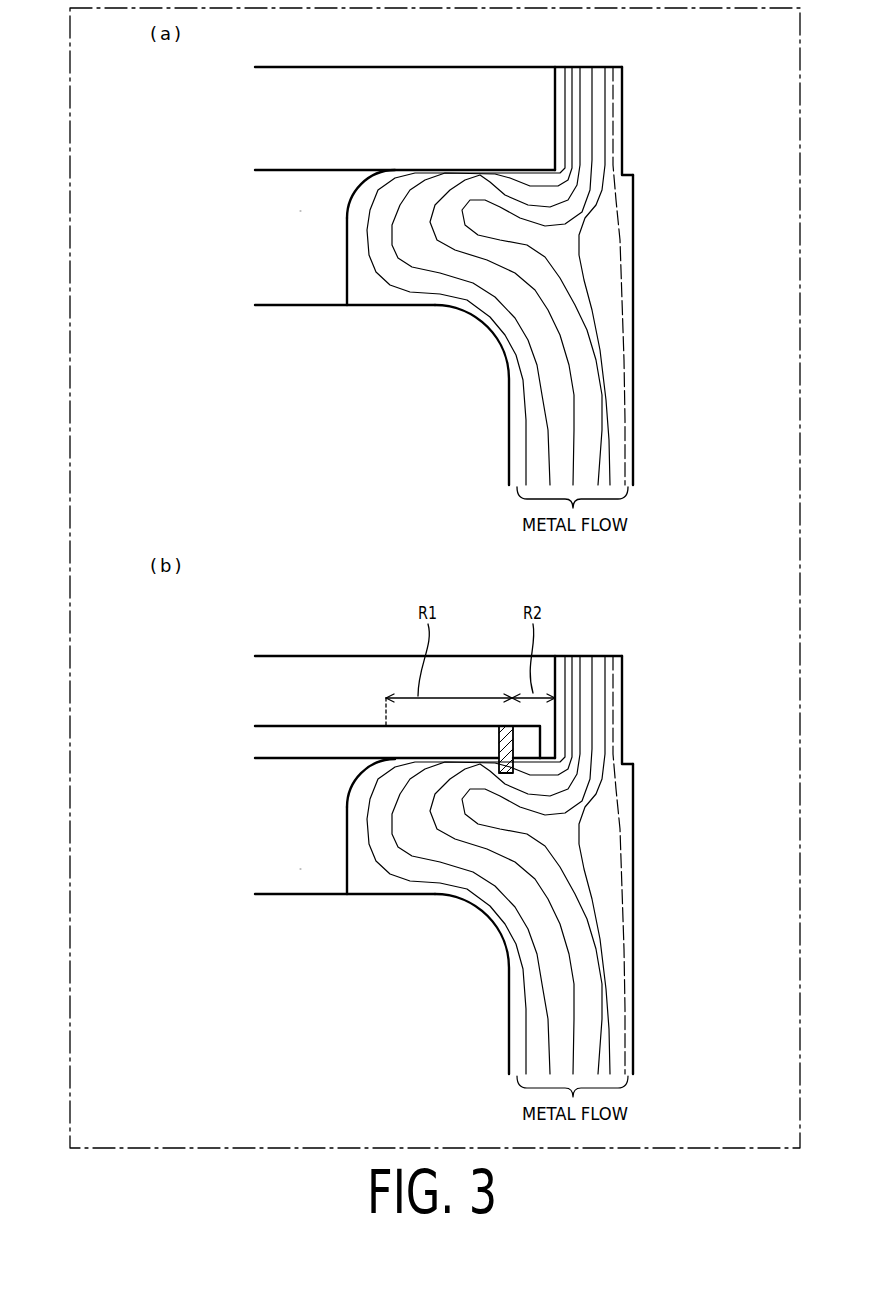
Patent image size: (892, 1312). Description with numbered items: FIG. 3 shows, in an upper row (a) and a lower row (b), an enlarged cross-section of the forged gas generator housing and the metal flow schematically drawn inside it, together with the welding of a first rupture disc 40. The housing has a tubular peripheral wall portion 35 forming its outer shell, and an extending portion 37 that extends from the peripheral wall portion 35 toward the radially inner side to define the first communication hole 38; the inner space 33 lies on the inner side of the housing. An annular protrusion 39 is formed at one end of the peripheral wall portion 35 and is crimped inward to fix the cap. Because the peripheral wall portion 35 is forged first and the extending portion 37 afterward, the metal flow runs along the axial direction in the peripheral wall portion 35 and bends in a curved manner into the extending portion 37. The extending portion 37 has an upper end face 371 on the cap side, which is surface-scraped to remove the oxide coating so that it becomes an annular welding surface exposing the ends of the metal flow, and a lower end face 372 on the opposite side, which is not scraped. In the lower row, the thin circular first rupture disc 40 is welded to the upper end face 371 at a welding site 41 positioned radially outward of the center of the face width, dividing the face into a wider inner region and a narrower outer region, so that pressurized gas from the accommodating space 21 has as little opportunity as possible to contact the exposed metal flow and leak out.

The accommodating space 21 is at (331, 126).
The inner space 33 is at (332, 362).
The peripheral wall portion 35 is at (631, 402).
The extending portion 37 is at (348, 247).
The first communication hole 38 is at (303, 211).
The annular protrusion 39 is at (617, 73).
The first rupture disc 40 is at (284, 735).
The welding site 41 is at (498, 740).
The upper end face 371 is at (475, 168).
The lower end face 372 is at (422, 307).